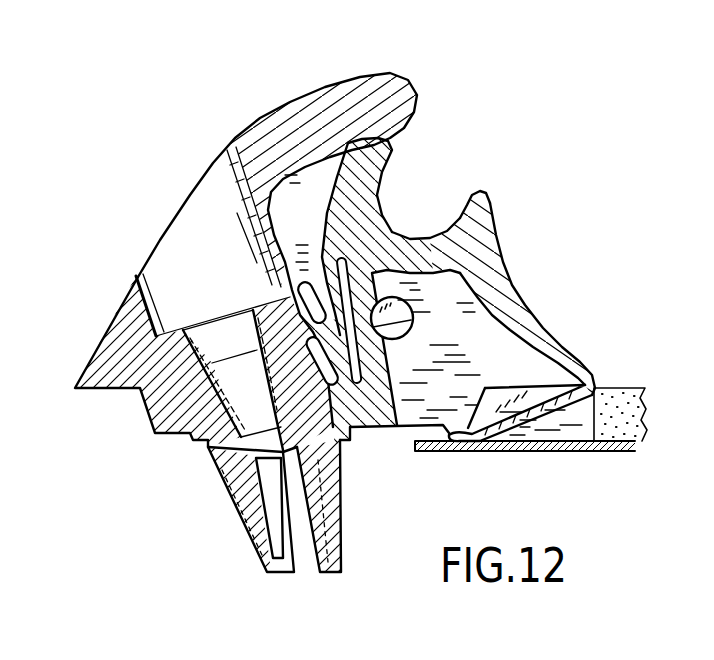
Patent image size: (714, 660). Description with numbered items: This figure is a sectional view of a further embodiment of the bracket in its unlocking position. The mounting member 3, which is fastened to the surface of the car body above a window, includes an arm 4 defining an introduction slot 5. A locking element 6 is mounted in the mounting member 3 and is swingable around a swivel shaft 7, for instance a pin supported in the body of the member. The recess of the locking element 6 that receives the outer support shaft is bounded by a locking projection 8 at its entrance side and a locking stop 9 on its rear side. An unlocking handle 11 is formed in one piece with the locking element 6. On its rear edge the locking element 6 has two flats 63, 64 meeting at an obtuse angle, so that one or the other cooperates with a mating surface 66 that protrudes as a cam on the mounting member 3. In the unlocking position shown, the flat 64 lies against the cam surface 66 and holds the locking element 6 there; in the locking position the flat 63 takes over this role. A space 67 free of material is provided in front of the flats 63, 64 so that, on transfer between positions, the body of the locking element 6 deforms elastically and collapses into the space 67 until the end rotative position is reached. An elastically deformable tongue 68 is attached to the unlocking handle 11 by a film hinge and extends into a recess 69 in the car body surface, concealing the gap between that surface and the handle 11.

The mounting member 3 is at (153, 431).
The arm 4 is at (397, 78).
The introduction slot 5 is at (405, 208).
The locking element 6 is at (344, 214).
The swivel shaft 7 is at (413, 305).
The locking projection 8 is at (487, 193).
The locking stop 9 is at (405, 143).
The unlocking handle 11 is at (518, 302).
The flat 63 is at (318, 300).
The flat 64 is at (265, 512).
The mating surface 66 is at (303, 337).
The space 67 is at (300, 368).
The elastically deformable tongue 68 is at (567, 380).
The recess 69 is at (567, 428).